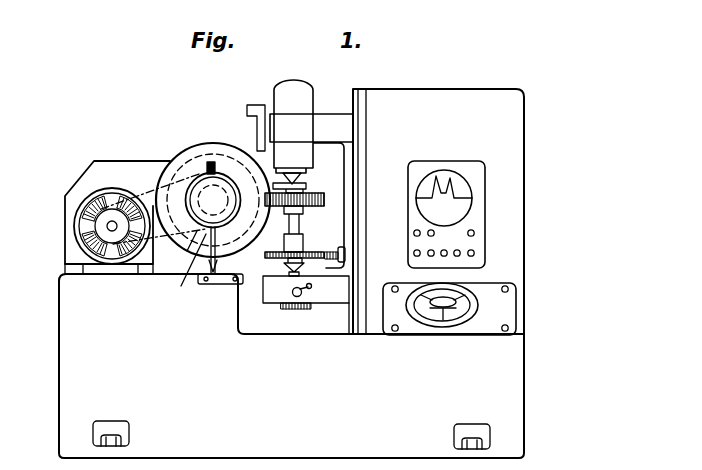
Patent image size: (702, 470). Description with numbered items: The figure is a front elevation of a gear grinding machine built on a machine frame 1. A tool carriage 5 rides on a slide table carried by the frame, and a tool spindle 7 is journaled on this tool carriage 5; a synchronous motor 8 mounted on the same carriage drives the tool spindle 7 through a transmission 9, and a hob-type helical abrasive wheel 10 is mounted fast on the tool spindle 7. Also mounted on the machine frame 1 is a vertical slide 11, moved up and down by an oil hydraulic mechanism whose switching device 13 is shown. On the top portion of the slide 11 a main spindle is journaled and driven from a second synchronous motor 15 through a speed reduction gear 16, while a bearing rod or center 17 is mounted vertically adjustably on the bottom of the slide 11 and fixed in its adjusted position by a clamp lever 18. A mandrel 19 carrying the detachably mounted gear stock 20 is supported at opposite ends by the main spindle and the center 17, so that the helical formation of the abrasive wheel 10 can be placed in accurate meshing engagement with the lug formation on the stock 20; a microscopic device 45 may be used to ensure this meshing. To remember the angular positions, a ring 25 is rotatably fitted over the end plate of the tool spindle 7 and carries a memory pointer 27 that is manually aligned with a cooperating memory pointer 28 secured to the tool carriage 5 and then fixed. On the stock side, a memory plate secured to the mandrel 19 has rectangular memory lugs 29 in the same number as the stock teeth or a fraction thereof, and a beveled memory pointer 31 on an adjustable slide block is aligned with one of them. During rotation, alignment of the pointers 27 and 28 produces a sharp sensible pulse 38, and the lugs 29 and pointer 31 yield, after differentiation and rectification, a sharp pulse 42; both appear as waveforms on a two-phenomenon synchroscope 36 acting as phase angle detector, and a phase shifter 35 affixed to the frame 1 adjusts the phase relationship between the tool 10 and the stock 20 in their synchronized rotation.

The machine frame 1 is at (51, 357).
The tool carriage 5 is at (76, 171).
The tool spindle 7 is at (193, 170).
The synchronous motor 8 is at (65, 221).
The transmission 9 is at (153, 188).
The hob-type helical abrasive wheel 10 is at (215, 136).
The vertical slide 11 is at (327, 289).
The switching device 13 is at (225, 167).
The synchronous motor 15 is at (293, 83).
The speed reduction gear 16 is at (296, 143).
The bearing rod or center 17 is at (285, 262).
The clamp lever 18 is at (293, 289).
The mandrel 19 is at (289, 215).
The gear stock 20 is at (313, 188).
The ring 25 is at (176, 252).
The memory pointer 27 is at (182, 271).
The memory pointer 28 is at (204, 266).
The memory lugs 29 is at (258, 249).
The memory pointer 31 is at (321, 245).
The phase shifter 35 is at (500, 310).
The two-phenomenon synchroscope 36 is at (464, 226).
The sharp sensible pulse 38 is at (444, 182).
The sharp rising pulse 42 is at (430, 178).
The microscopic device 45 is at (250, 97).